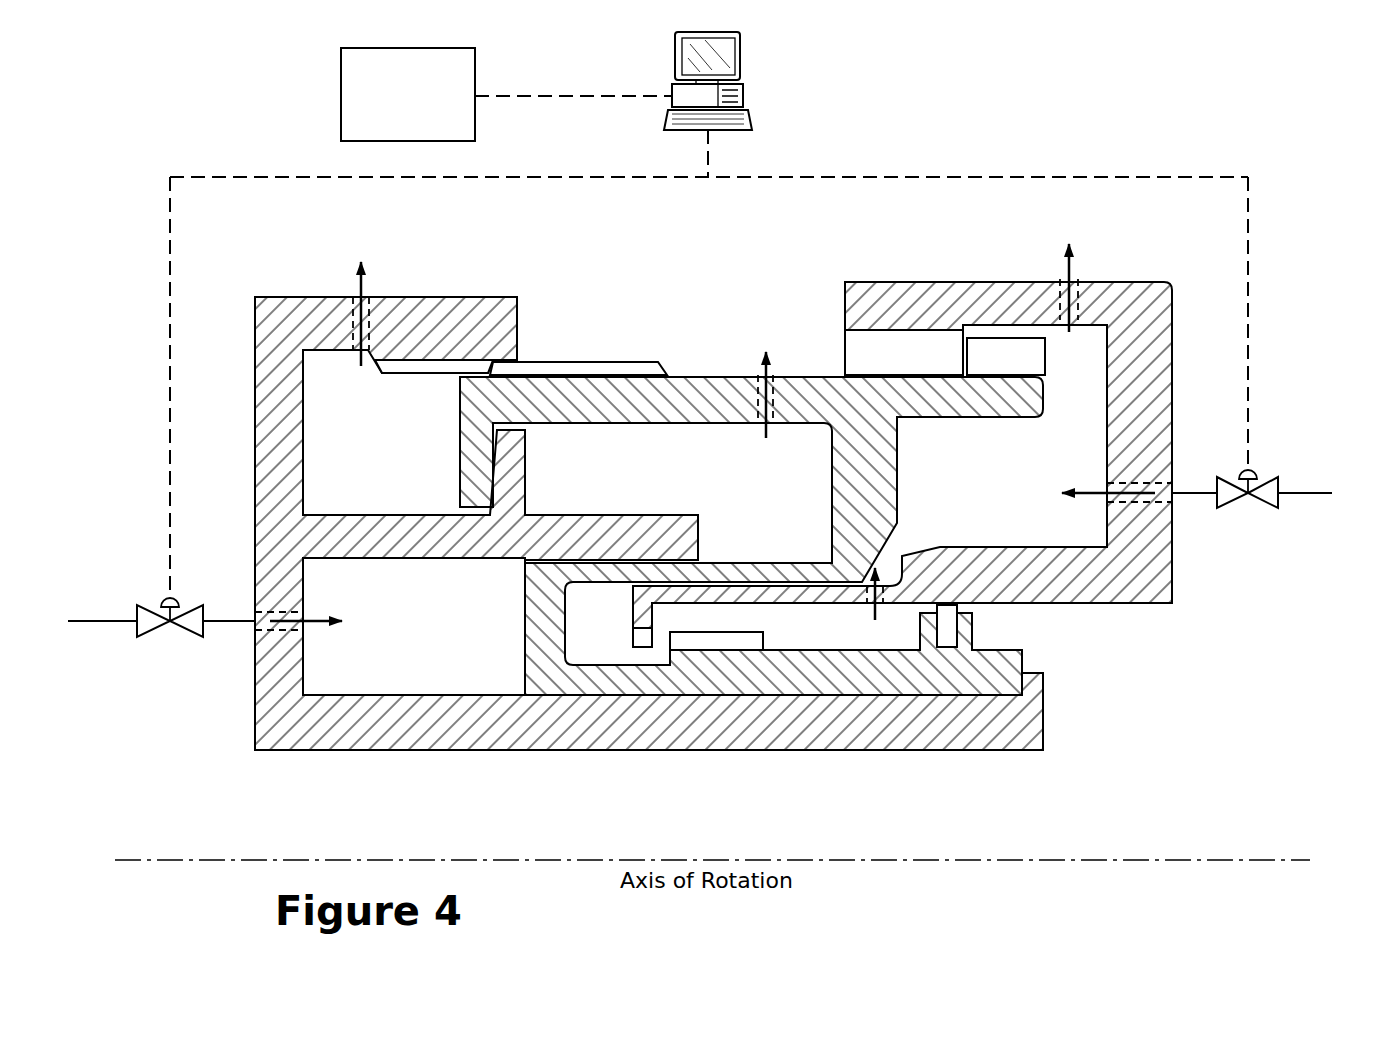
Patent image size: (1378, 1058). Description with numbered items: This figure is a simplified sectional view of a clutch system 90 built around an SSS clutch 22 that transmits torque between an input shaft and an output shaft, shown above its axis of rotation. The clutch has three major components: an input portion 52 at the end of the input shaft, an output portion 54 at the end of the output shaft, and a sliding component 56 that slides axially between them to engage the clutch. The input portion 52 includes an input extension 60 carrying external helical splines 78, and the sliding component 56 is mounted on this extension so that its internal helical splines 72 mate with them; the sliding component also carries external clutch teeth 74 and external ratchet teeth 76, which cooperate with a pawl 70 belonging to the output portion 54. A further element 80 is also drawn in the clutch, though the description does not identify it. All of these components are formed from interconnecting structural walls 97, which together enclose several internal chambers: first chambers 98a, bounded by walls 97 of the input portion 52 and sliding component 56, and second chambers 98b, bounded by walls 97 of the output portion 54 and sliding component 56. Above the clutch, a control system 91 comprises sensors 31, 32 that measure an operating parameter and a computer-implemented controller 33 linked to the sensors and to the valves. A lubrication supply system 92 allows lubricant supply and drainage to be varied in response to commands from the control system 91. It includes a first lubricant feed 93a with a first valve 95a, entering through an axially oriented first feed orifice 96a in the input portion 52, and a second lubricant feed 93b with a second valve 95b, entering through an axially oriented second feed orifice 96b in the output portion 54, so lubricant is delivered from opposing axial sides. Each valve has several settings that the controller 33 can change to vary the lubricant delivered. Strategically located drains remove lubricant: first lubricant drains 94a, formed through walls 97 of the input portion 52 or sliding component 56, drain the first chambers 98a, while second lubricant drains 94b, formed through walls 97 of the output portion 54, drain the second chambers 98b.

The SSS clutch 22 is at (712, 506).
The sensor 31 is at (345, 94).
The sensor 32 is at (341, 96).
The controller 33 is at (745, 96).
The input portion 52 is at (615, 556).
The output portion 54 is at (1135, 293).
The sliding component 56 is at (777, 580).
The input extension 60 is at (630, 735).
The pawl 70 is at (950, 623).
The internal helical splines 72 is at (937, 700).
The external clutch teeth 74 is at (733, 641).
The external ratchet teeth 76 is at (965, 635).
The external helical splines 78 is at (768, 695).
The third seal 80 is at (605, 638).
The clutch system 90 is at (285, 72).
The control system 91 is at (631, 71).
The lubrication supply system 92 is at (714, 558).
The first lubricant feed 93a is at (213, 685).
The second lubricant feed 93b is at (1288, 446).
The first lubricant drain 94a is at (388, 312).
The second lubricant drain 94b is at (1086, 262).
The first valve 95a is at (140, 617).
The second valve 95b is at (1232, 505).
The first feed orifice 96a is at (262, 606).
The second feed orifice 96b is at (1155, 505).
The walls 97 is at (492, 322).
The first chambers 98a is at (567, 522).
The second chambers 98b is at (935, 487).